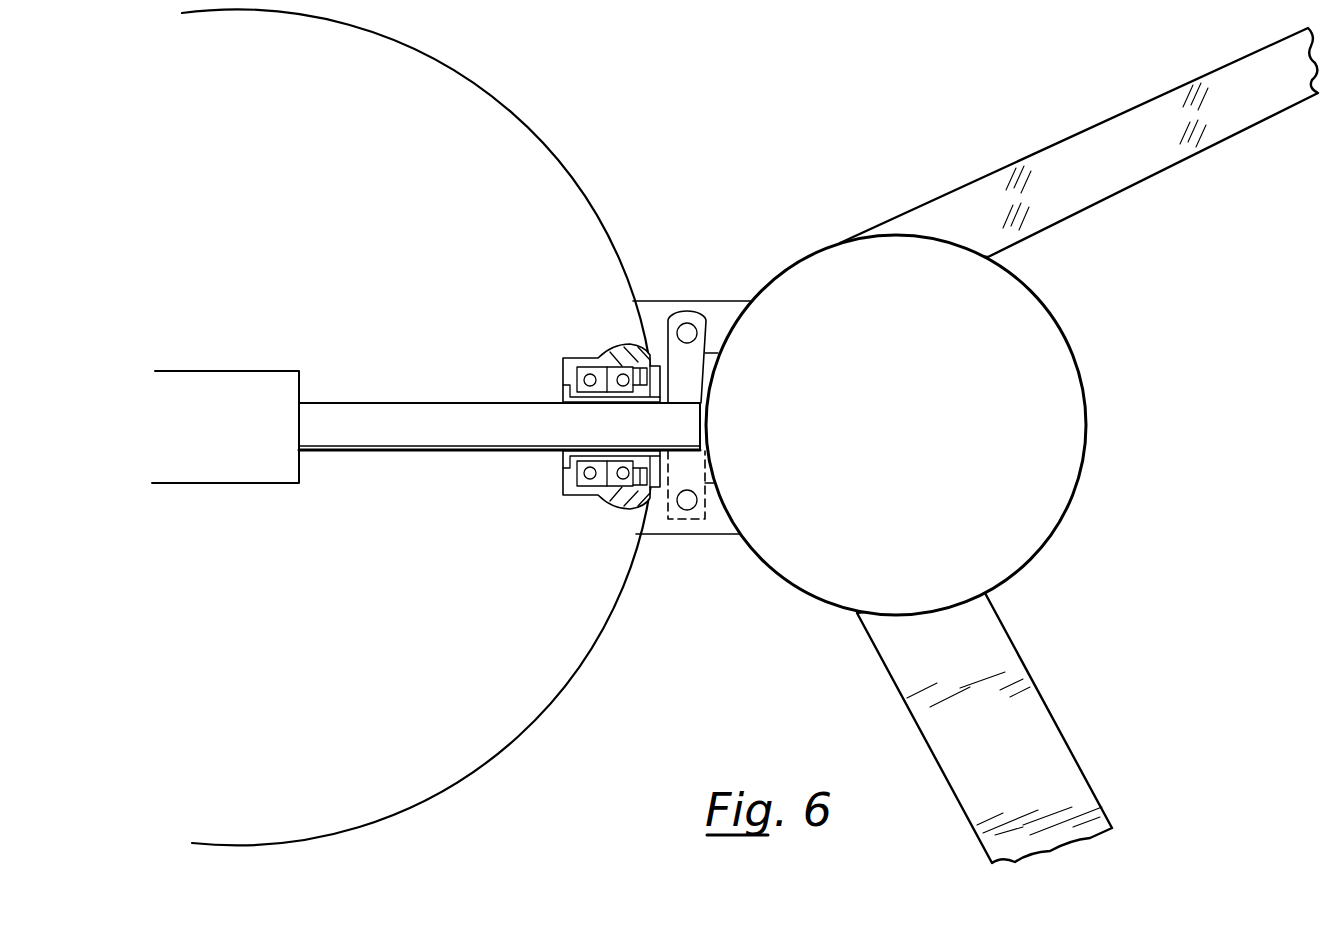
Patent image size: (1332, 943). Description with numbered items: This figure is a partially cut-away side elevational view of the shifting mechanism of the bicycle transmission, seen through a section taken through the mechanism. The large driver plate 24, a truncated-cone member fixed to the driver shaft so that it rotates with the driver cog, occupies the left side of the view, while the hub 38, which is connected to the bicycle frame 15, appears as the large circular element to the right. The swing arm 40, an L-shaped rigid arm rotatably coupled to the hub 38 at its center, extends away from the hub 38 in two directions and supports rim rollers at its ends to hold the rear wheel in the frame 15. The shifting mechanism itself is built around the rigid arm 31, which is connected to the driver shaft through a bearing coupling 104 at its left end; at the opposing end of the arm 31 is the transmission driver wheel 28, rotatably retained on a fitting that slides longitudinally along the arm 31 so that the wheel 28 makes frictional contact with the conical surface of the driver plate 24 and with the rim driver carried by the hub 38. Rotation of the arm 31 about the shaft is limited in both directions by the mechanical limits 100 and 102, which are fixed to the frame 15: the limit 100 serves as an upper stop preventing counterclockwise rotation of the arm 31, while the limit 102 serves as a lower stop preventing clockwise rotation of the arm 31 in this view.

The bicycle frame 15 is at (738, 307).
The driver plate 24 is at (550, 185).
The transmission driver wheel 28 is at (628, 341).
The rigid arm 31 is at (463, 402).
The hub 38 is at (1070, 372).
The swing arm 40 is at (1083, 128).
The mechanical limit 100 is at (688, 326).
The mechanical limit 102 is at (683, 507).
The bearing coupling 104 is at (265, 485).